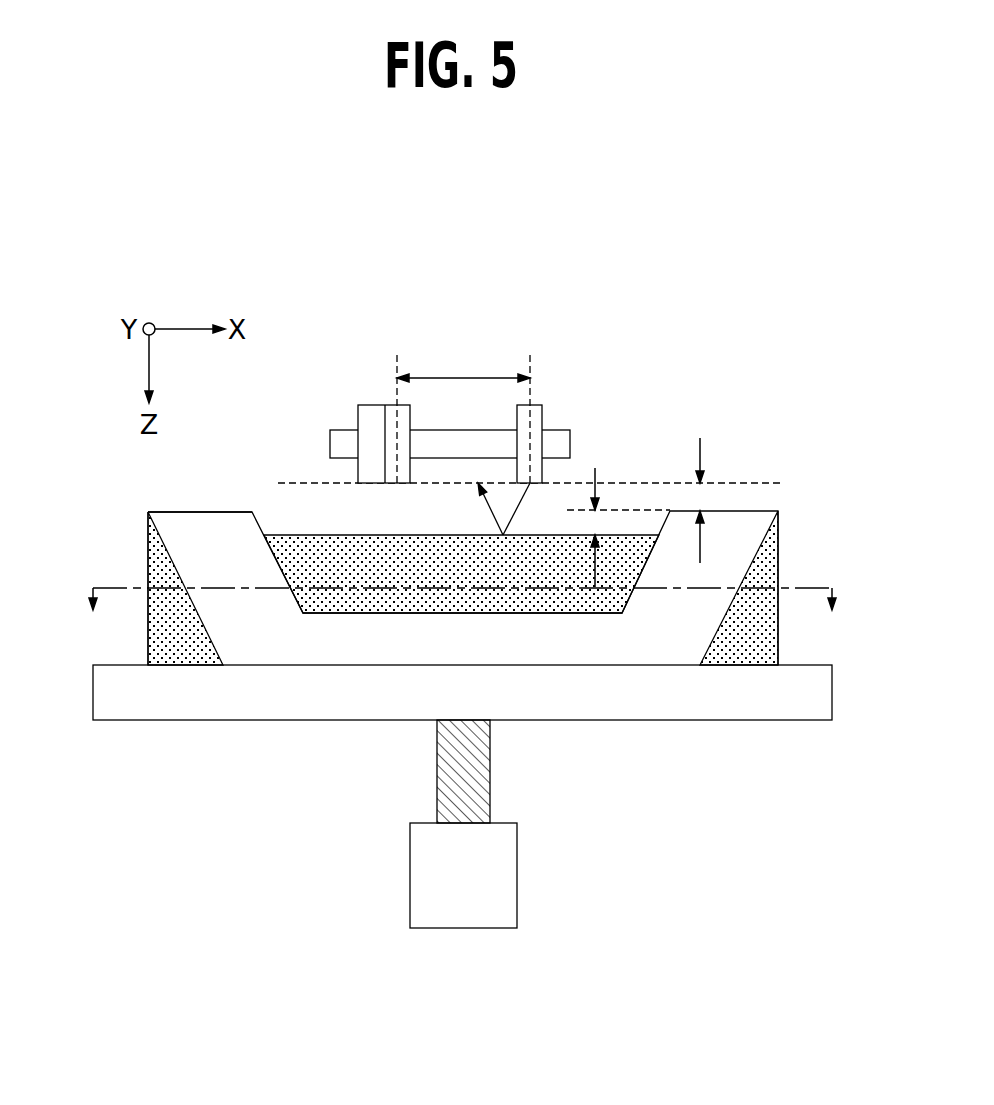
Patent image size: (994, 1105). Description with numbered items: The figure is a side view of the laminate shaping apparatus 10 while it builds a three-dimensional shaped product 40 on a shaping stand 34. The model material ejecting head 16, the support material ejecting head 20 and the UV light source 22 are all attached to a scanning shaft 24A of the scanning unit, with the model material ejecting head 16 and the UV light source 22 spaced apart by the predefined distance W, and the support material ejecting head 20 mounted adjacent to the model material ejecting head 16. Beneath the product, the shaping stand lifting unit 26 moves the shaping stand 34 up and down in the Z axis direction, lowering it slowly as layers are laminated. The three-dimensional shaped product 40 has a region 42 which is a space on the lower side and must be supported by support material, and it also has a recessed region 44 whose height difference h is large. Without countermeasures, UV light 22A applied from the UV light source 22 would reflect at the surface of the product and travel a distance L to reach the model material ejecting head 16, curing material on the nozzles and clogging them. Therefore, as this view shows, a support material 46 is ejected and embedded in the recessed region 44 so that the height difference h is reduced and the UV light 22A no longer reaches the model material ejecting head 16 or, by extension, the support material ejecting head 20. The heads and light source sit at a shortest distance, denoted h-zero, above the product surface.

The laminate shaping apparatus 10 is at (463, 593).
The model material ejecting head 16 is at (497, 409).
The support material ejecting head 20 is at (372, 405).
The UV light source 22 is at (540, 405).
The UV light 22A is at (490, 515).
The scanning shaft 24A is at (570, 444).
The shaping stand lifting unit 26 is at (517, 875).
The shaping stand 34 is at (780, 712).
The three-dimensional shaped product 40 is at (207, 520).
The region which is a space on the lower side 42 is at (130, 565).
The recessed region 44 is at (272, 513).
The support material 46 is at (338, 555).